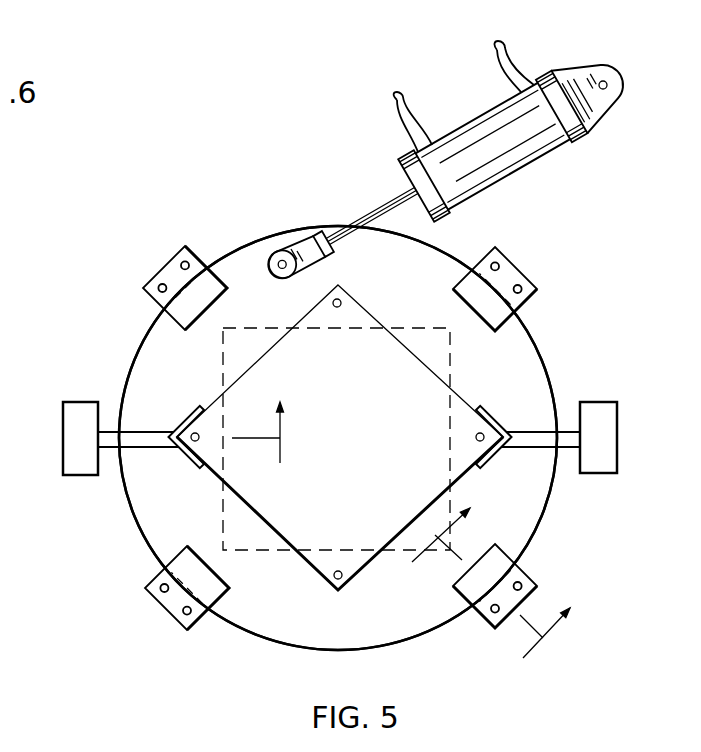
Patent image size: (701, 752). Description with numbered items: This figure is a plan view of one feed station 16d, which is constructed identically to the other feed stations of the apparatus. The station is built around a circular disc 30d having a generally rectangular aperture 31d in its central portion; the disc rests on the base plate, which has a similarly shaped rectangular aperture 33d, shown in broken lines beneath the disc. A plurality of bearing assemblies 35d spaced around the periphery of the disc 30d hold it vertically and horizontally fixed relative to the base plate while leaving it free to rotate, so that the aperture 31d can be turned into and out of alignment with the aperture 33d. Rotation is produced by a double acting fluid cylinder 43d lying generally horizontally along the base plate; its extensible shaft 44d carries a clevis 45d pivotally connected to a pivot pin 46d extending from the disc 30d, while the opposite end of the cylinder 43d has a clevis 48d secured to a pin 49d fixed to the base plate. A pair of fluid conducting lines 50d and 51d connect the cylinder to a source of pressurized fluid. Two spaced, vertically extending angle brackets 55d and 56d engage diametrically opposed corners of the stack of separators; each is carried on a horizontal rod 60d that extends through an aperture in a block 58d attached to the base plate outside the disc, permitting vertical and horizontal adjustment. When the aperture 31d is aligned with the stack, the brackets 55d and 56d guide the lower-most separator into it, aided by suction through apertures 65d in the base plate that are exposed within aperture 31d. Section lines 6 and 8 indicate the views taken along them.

The feed station 16d is at (548, 340).
The circular disc 30d is at (441, 250).
The rectangular aperture 31d is at (421, 359).
The rectangular aperture 33d is at (335, 331).
The bearing assemblies 35d is at (169, 263).
The double acting fluid cylinder 43d is at (462, 127).
The extensible shaft 44d is at (374, 210).
The clevis 45d is at (293, 235).
The pivot pin 46d is at (271, 252).
The clevis 48d is at (595, 72).
The pin 49d is at (608, 85).
The fluid conducting line 50d is at (414, 98).
The fluid conducting line 51d is at (511, 52).
The angle bracket 55d is at (490, 422).
The angle bracket 56d is at (178, 420).
The block 58d is at (77, 415).
The rod 60d is at (138, 444).
The apertures 65d is at (341, 302).
The section line 6- 6 is at (258, 447).
The section line 8- 8 is at (482, 593).